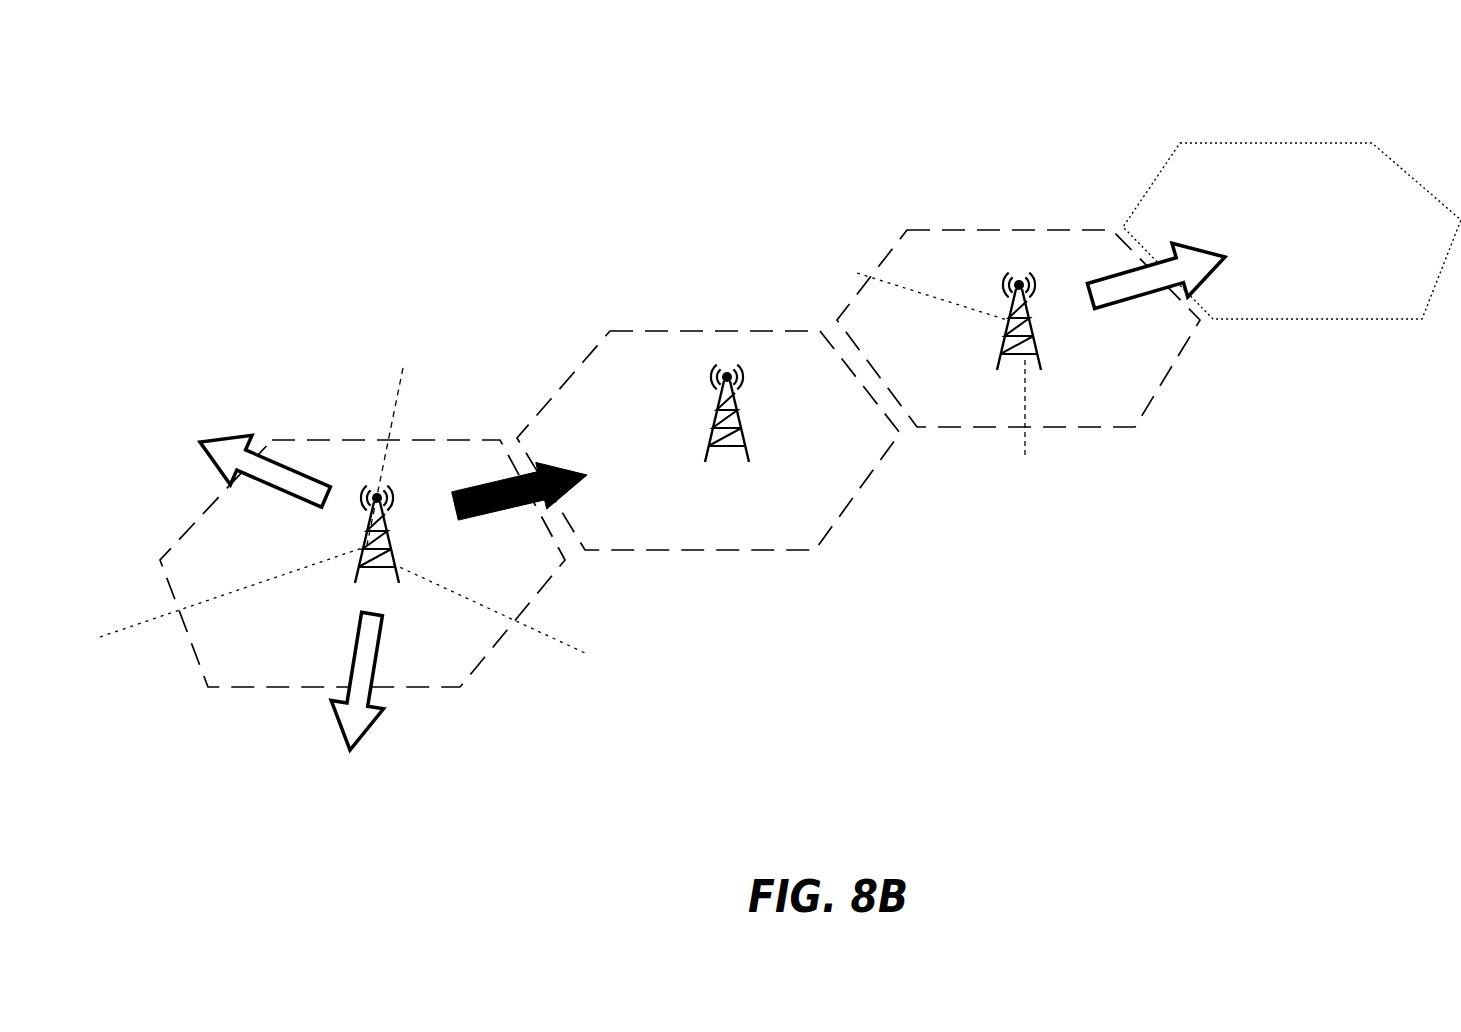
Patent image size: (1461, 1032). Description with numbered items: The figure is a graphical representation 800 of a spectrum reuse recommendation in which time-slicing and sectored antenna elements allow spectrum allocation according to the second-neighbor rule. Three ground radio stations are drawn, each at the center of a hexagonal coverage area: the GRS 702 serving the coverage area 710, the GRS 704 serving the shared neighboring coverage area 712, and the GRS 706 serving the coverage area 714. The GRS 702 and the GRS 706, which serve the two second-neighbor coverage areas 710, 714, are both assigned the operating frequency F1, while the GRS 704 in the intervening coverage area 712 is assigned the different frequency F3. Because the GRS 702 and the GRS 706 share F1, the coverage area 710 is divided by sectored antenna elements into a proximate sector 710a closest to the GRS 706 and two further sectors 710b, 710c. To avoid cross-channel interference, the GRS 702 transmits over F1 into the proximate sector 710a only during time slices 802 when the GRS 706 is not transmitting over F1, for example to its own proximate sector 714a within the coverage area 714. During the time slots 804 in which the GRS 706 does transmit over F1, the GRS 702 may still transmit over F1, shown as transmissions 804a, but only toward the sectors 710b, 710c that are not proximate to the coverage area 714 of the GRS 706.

The wireless network cell deployment 800 is at (236, 110).
The ground radio station 702 is at (374, 496).
The ground radio station 704 is at (724, 372).
The ground radio station 706 is at (1012, 278).
The coverage area 710 is at (485, 655).
The proximate sector 710a is at (520, 587).
The sector 710b is at (297, 662).
The sector 710c is at (260, 557).
The shared neighboring coverage area 712 is at (838, 523).
The coverage area 714 is at (1180, 360).
The proximate sector 714a is at (995, 413).
The time slices 802 is at (487, 492).
The time slots 804 is at (1143, 280).
The transmission over F1 804a is at (226, 447).